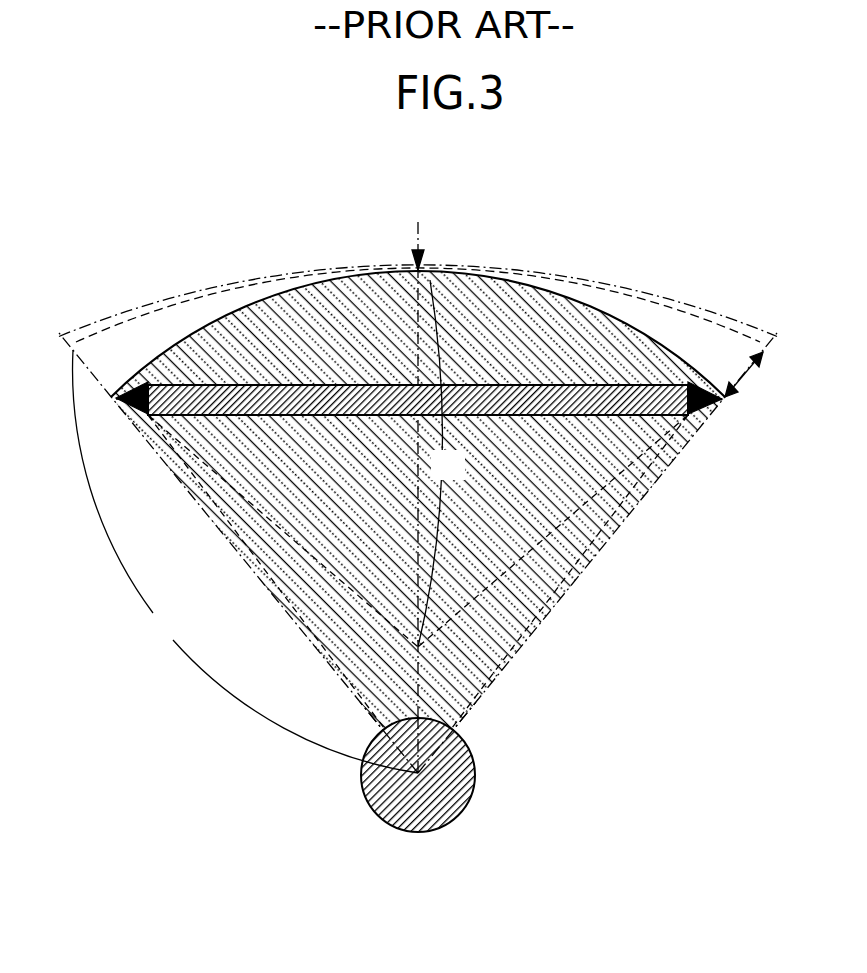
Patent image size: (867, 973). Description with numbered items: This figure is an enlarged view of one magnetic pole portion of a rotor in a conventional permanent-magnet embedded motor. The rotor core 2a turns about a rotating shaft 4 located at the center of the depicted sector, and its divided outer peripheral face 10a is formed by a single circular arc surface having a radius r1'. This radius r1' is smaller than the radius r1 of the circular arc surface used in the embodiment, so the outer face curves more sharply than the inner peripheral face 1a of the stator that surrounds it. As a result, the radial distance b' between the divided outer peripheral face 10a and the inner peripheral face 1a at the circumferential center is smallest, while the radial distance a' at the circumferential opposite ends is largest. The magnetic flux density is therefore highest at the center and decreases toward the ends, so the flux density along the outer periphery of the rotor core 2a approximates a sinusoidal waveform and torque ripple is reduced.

The inner peripheral face of the stator 1a is at (663, 305).
The divided outer peripheral face 10a is at (597, 305).
The rotor core 2a is at (487, 310).
The rotating shaft 4 is at (465, 777).
The radius r1 is at (245, 561).
The radius r1' is at (441, 463).
The radial distance a' is at (765, 387).
The radial distance b' is at (455, 250).